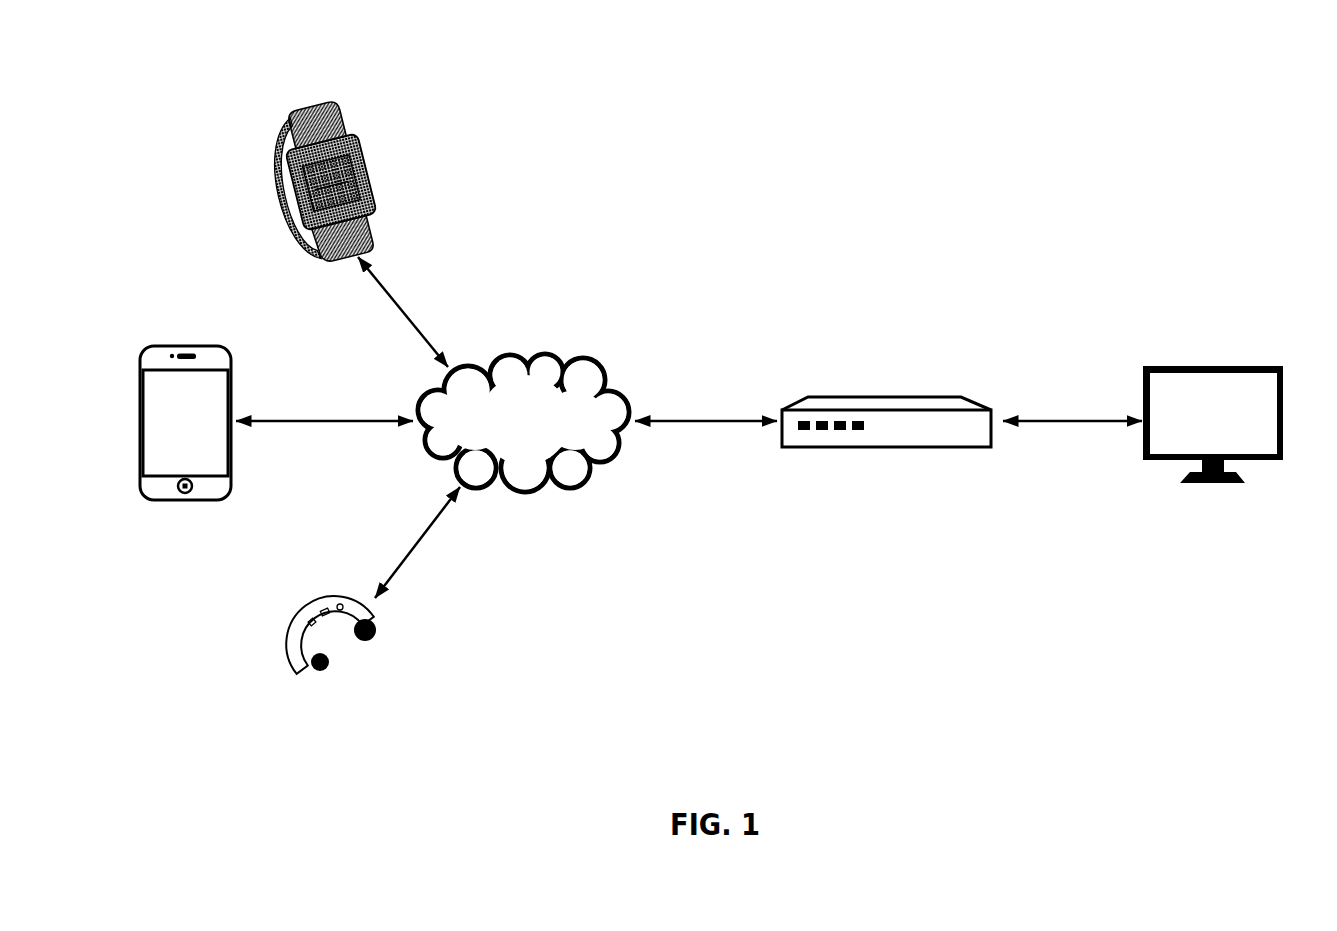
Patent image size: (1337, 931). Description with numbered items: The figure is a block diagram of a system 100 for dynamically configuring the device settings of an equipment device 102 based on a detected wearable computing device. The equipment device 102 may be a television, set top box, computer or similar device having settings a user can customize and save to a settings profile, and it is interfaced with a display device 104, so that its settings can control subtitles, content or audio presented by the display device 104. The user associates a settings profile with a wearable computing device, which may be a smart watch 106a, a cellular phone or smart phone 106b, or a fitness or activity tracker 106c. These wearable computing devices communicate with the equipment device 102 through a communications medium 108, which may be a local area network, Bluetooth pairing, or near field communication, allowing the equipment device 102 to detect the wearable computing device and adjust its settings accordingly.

The system 100 is at (1296, 55).
The equipment device 102 is at (916, 393).
The display device 104 is at (1180, 365).
The wearable computing device (smart watch) 106a is at (367, 137).
The wearable computing device (smart phone) 106b is at (230, 373).
The wearable computing device (fitness or activity tracker) 106c is at (303, 613).
The communications medium 108 is at (583, 353).